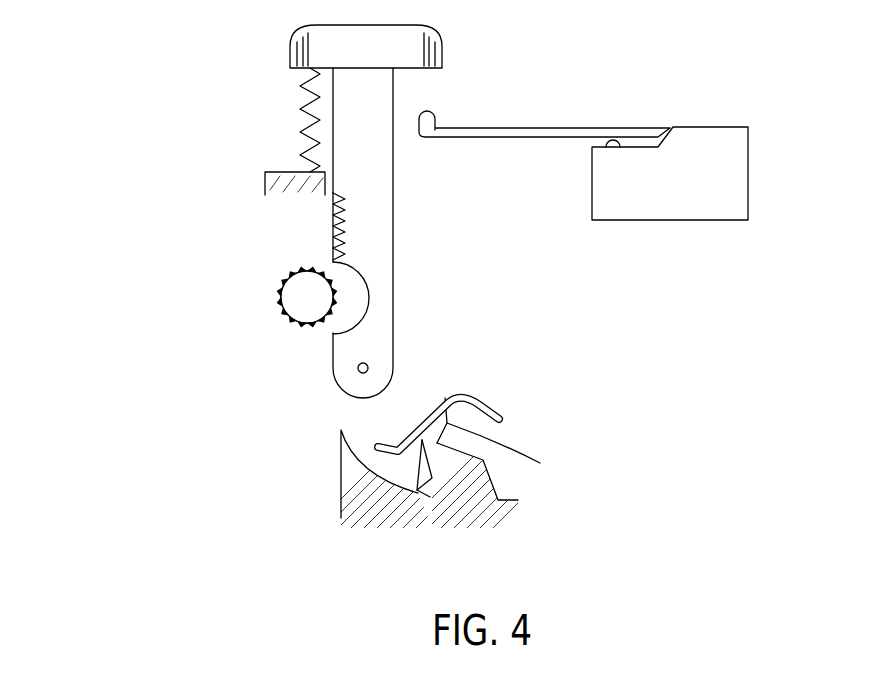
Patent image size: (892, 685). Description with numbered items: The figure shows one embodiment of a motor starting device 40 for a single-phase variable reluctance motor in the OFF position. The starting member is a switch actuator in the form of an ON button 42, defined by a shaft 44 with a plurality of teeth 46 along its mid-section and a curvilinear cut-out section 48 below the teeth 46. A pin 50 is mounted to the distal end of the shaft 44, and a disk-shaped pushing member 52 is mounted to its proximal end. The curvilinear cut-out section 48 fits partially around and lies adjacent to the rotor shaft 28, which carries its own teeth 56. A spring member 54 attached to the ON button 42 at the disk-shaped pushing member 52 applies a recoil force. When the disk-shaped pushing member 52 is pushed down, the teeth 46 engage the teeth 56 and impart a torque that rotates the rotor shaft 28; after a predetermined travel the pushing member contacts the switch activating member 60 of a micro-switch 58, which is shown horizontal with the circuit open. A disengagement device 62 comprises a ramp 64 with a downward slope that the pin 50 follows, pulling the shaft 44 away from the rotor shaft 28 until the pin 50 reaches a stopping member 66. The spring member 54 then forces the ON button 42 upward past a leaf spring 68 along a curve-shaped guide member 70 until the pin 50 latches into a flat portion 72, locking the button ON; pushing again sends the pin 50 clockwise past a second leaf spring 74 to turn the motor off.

The motor starting device 40 is at (110, 109).
The ON button 42 is at (470, 71).
The disk-shaped pushing member 52 is at (328, 30).
The spring member 54 is at (300, 137).
The shaft 44 is at (383, 228).
The teeth 46 is at (333, 243).
The curvilinear cut-out section 48 is at (370, 306).
The pin 50 is at (358, 370).
The rotor shaft 28 is at (300, 298).
The teeth 56 is at (287, 332).
The switch activating member 60 is at (550, 130).
The micro-switch 58 is at (732, 185).
The disengagement device 62 is at (497, 361).
The ramp 64 is at (352, 502).
The stopping member 66 is at (413, 492).
The leaf spring 68 is at (427, 442).
The curve-shaped guide member 70 is at (442, 403).
The flat portion 72 is at (480, 407).
The second leaf spring 74 is at (537, 463).